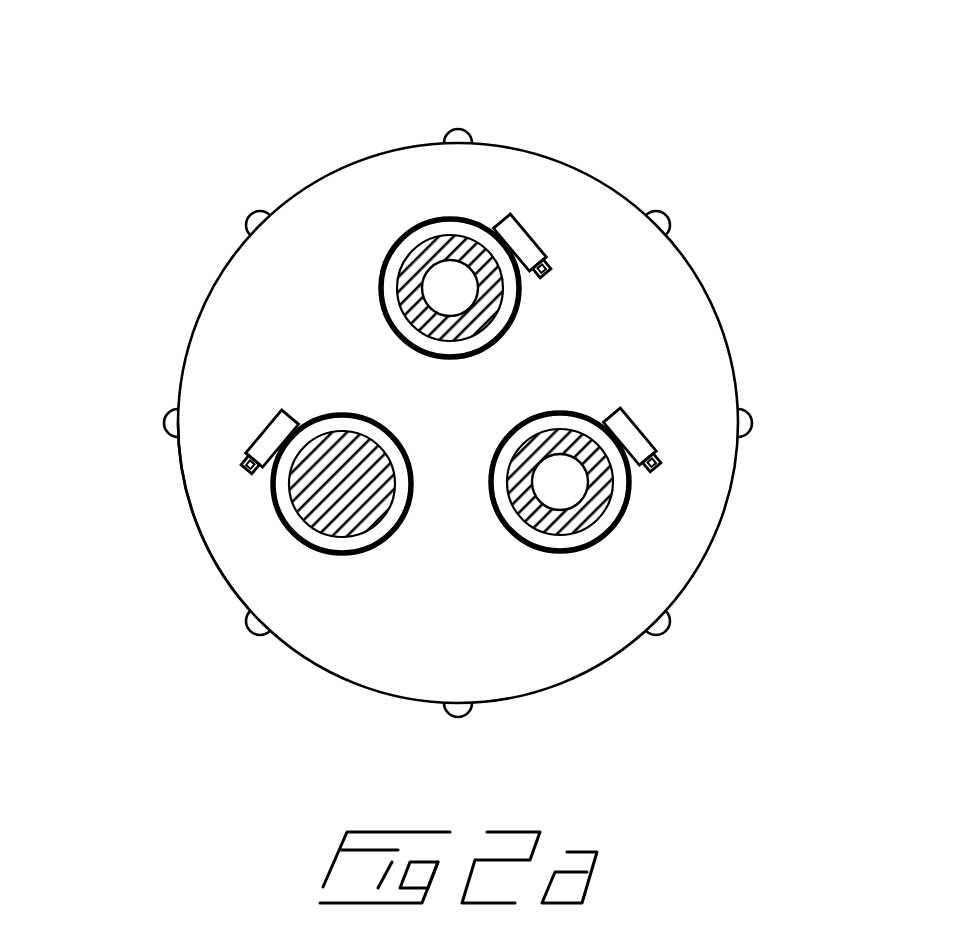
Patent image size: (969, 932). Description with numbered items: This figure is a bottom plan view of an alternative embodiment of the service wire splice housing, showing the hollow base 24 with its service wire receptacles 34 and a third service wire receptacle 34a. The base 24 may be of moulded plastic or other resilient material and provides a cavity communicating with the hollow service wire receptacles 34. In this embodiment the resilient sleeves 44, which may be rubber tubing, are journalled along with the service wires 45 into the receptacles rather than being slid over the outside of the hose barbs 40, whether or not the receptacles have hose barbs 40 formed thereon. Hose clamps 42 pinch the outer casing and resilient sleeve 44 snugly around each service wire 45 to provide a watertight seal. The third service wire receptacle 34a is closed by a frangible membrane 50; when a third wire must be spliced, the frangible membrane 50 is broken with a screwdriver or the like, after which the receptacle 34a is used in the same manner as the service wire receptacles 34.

The base 24 is at (730, 348).
The service wire receptacles 34 is at (510, 165).
The third service wire receptacle 34a is at (247, 538).
The hose barbs 40 is at (620, 503).
The hose clamps 42 is at (482, 217).
The resilient sleeves 44 is at (483, 313).
The service wire 45 is at (450, 280).
The frangible membrane 50 is at (328, 460).